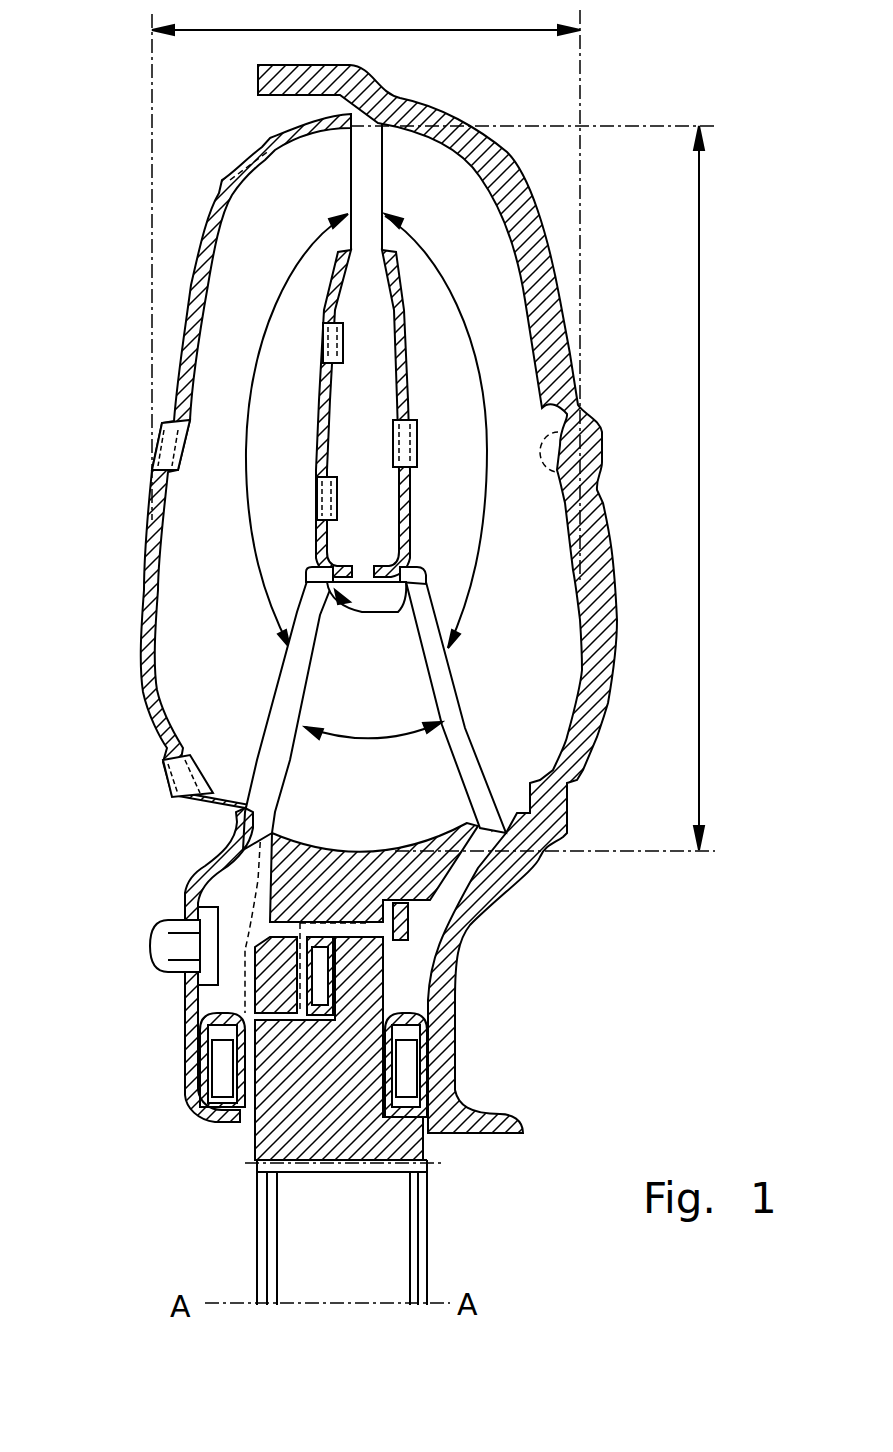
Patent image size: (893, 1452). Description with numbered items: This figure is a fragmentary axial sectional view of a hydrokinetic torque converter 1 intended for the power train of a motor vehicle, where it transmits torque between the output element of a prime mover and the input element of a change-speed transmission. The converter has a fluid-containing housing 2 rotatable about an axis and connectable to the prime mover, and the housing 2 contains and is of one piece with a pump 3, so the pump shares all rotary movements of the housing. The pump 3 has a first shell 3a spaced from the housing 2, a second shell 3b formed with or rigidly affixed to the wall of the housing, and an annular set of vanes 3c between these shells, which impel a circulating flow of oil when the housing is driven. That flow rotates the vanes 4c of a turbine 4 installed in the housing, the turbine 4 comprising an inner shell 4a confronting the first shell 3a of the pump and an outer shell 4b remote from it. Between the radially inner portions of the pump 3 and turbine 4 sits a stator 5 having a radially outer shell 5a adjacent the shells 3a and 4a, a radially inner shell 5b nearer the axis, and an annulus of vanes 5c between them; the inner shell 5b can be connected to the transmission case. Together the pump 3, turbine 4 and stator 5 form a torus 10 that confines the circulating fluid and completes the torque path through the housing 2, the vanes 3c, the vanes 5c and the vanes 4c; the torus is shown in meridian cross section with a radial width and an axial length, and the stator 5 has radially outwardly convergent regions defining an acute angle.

The hydrokinetic torque converter 1 is at (638, 61).
The housing 2 is at (607, 706).
The pump 3 is at (468, 432).
The first shell 3a is at (412, 353).
The second shell 3b is at (541, 252).
The vanes 3c is at (538, 680).
The turbine 4 is at (185, 543).
The inner shell 4a is at (324, 407).
The outer shell 4b is at (190, 316).
The vanes 4c is at (310, 208).
The stator 5 is at (299, 936).
The radially outer shell 5a is at (358, 612).
The radially inner shell 5b is at (247, 860).
The vanes 5c is at (347, 677).
The torus 10 is at (458, 190).